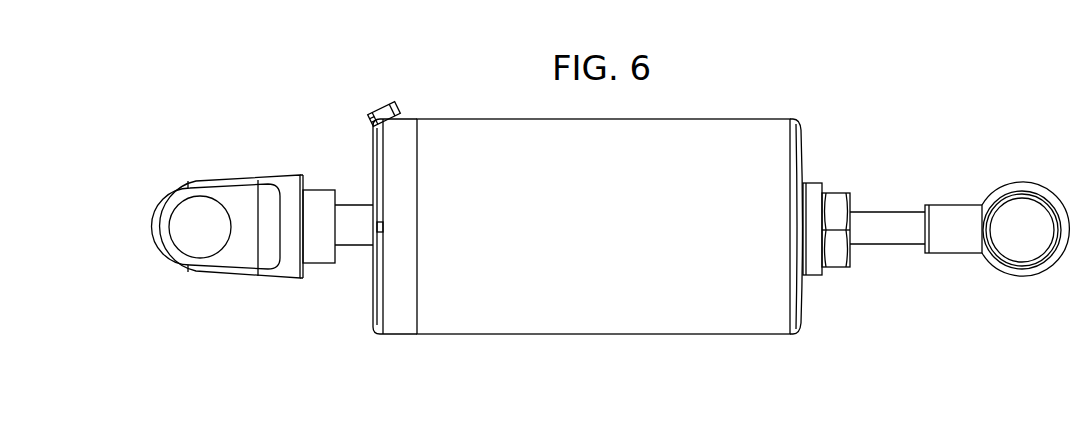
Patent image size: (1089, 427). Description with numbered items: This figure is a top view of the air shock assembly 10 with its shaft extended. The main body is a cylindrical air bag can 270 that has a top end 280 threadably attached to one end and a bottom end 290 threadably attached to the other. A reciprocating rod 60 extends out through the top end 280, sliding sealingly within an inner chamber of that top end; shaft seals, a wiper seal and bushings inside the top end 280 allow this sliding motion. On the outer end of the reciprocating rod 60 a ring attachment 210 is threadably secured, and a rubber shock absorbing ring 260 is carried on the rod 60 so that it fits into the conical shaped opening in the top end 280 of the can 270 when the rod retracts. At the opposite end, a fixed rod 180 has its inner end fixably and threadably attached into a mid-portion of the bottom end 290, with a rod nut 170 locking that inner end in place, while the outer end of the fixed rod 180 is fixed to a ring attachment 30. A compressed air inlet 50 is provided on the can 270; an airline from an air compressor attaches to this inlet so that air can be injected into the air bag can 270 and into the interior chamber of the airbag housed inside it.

The air shock assembly 10 is at (776, 77).
The ring attachment 30 is at (997, 190).
The compressed air inlet 50 is at (392, 105).
The reciprocating rod 60 is at (353, 242).
The rod nut 170 is at (838, 258).
The fixed rod 180 is at (885, 225).
The ring attachment 210 is at (198, 187).
The rubber shock absorbing ring 260 is at (313, 253).
The cylindrical air bag can 270 is at (538, 327).
The top end 280 is at (389, 327).
The bottom end 290 is at (797, 322).